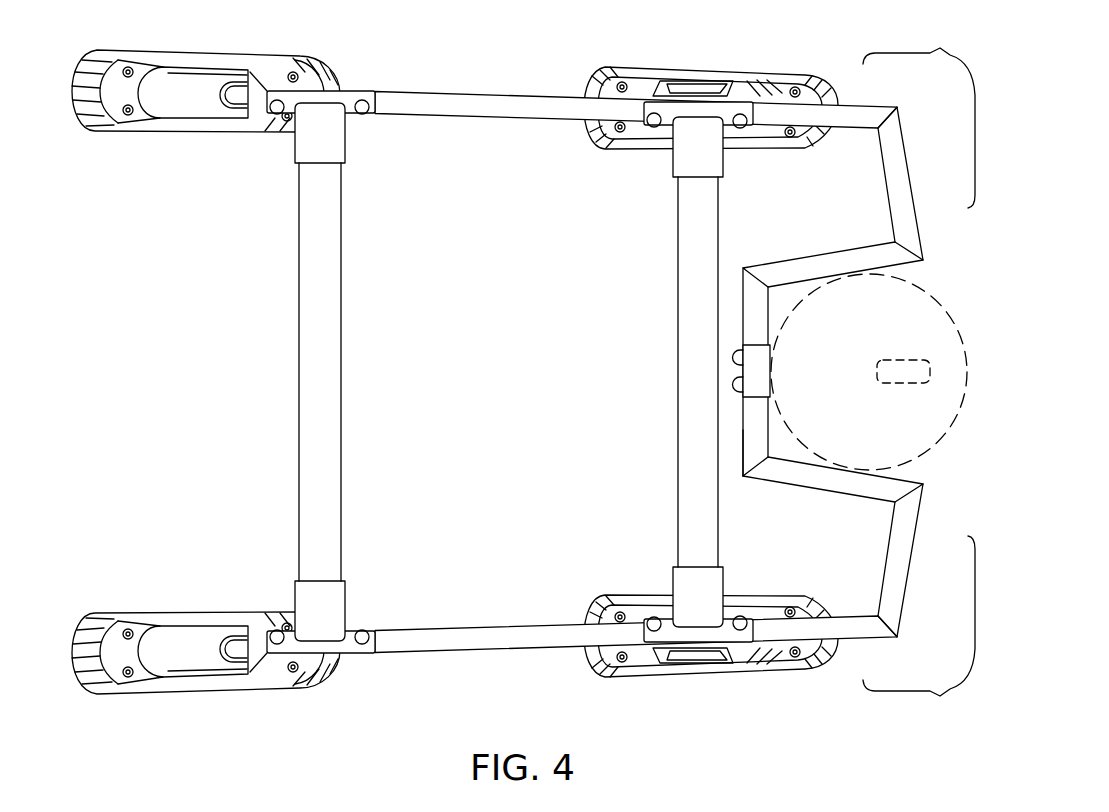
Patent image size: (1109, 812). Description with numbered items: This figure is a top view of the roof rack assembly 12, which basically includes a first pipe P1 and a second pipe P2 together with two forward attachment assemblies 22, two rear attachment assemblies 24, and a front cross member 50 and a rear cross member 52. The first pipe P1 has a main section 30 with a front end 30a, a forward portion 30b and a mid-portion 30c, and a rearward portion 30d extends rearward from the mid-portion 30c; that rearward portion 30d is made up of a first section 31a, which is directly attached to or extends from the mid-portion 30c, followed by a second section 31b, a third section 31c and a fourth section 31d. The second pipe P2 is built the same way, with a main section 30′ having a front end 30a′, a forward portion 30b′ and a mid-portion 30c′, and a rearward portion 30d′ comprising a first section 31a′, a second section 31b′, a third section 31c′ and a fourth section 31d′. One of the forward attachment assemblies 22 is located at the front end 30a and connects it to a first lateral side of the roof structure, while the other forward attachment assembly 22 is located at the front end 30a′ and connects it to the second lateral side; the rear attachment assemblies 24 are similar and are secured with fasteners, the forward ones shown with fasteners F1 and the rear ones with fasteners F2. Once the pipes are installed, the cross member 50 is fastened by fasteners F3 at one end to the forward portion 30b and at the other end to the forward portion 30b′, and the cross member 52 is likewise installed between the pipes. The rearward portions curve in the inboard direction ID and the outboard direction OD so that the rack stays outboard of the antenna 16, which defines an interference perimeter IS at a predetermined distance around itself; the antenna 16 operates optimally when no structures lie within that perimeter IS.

The roof rack assembly 12 is at (828, 44).
The antenna 16 is at (900, 384).
The forward attachment assemblies 22 is at (193, 65).
The rear attachment assemblies 24 is at (737, 70).
The main section 30 is at (487, 90).
The main section 30′ is at (487, 654).
The front end 30a is at (235, 93).
The front end 30a′ is at (235, 650).
The forward portion 30b is at (350, 90).
The forward portion 30b′ is at (350, 656).
The mid-portion 30c is at (690, 102).
The mid-portion 30c′ is at (690, 642).
The rearward portion 30d is at (919, 119).
The rearward portion 30d′ is at (919, 627).
The first section 31a is at (850, 117).
The first section 31a′ is at (850, 627).
The second section 31b is at (893, 143).
The second section 31b′ is at (893, 601).
The third section 31c is at (837, 263).
The third section 31c′ is at (837, 481).
The fourth section 31d is at (753, 317).
The fourth section 31d′ is at (753, 427).
The cross member 50 is at (318, 365).
The cross member 52 is at (697, 302).
The first fasteners F1 is at (132, 67).
The fasteners F2 is at (625, 83).
The fasteners F3 is at (277, 113).
The first pipe P1 is at (537, 90).
The second pipe P2 is at (537, 655).
The inboard direction ID is at (83, 284).
The outward direction OD is at (130, 252).
The interference perimeter IS is at (957, 256).